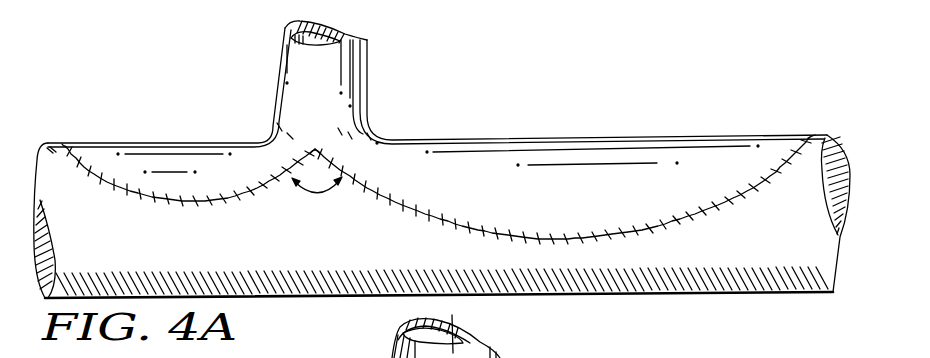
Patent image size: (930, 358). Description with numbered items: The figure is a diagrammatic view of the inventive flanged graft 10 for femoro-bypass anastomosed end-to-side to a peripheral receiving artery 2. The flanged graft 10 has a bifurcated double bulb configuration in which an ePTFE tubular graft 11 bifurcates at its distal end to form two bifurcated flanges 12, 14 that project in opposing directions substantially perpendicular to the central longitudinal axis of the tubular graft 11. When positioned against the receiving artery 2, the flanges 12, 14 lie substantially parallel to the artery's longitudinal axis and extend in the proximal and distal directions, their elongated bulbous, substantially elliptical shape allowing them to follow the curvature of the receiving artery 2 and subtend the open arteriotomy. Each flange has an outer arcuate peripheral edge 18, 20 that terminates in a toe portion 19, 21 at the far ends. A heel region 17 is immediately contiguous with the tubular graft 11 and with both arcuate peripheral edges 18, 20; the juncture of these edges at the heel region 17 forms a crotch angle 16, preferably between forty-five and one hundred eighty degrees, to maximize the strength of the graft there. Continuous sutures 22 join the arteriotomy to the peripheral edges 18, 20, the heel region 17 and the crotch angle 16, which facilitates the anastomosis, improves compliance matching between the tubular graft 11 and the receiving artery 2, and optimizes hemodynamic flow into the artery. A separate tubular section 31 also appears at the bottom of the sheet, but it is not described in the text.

The receiving artery 2 is at (652, 274).
The flanged graft 10 is at (641, 90).
The tubular graft 11 is at (277, 65).
The bifurcated flange 12 is at (485, 141).
The bifurcated flange 14 is at (187, 144).
The crotch angle 16 is at (318, 194).
The heel region 17 is at (316, 148).
The arcuate peripheral edge 18 is at (174, 202).
The toe portion 19 is at (68, 148).
The arcuate peripheral edge 20 is at (538, 240).
The toe portion 21 is at (808, 145).
The continuous sutures 22 is at (253, 202).
The tubular graft section 31 is at (456, 320).